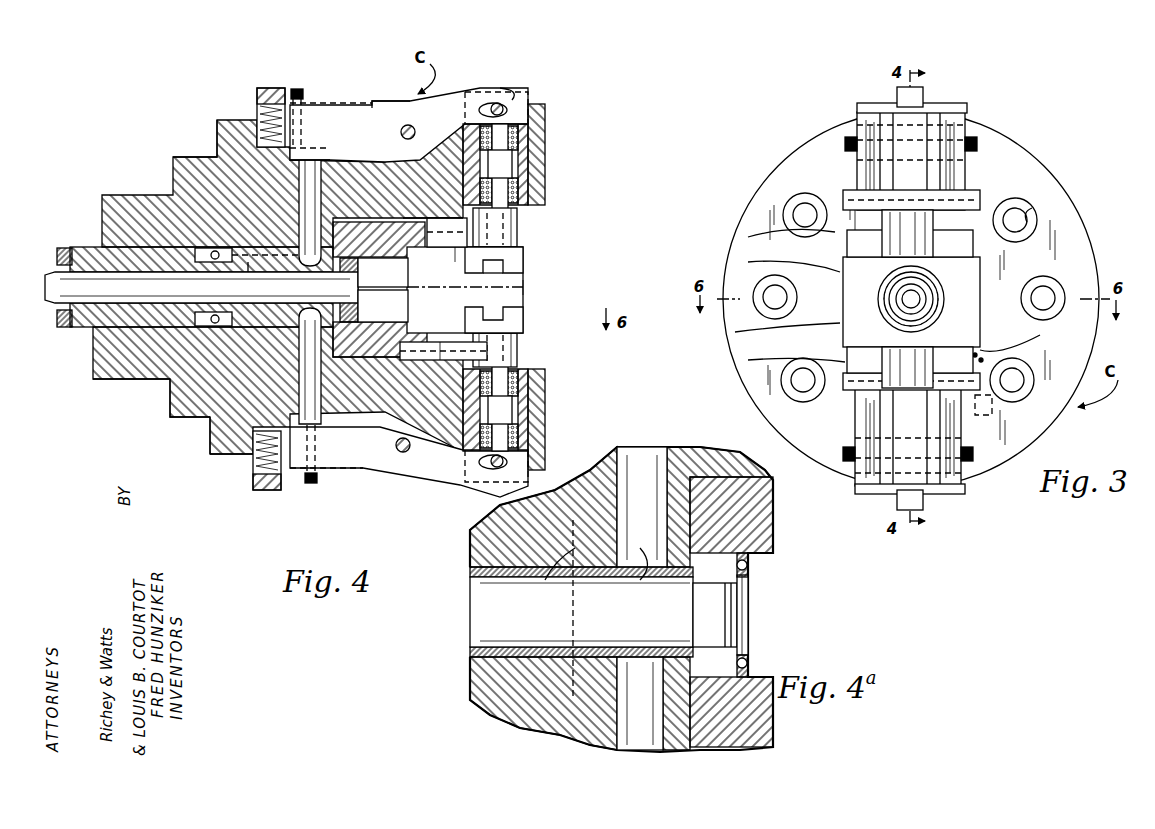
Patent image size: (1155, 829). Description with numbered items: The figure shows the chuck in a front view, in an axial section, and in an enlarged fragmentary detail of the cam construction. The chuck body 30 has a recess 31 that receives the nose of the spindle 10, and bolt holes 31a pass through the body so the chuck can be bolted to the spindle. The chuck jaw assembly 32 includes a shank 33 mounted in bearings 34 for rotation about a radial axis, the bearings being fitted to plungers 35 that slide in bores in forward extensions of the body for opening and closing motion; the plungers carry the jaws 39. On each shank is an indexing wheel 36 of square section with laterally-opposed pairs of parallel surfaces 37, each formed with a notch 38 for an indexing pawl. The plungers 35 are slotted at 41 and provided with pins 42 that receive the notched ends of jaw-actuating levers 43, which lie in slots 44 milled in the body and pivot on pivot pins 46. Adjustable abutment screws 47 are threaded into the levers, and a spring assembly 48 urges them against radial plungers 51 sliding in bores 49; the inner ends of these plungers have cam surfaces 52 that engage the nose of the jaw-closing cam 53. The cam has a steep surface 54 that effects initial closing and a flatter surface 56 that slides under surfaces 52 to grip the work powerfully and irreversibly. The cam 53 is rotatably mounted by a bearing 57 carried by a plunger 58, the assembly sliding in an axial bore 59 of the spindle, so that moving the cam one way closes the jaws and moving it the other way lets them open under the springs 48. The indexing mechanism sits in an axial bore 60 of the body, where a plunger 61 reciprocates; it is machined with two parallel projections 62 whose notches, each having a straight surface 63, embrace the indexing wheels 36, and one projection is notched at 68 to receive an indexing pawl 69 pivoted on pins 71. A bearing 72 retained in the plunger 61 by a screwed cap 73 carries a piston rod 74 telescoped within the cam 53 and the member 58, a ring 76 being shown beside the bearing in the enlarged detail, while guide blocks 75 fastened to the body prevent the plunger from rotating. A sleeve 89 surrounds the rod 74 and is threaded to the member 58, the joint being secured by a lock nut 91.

In FIG. 4, the spindle 10 is at (148, 192).
In FIG. 4A, the spindle 10 is at (472, 715).
In FIG. 4, the cover plate 30 is at (545, 116).
In FIG. 3, the cover plate 30 is at (1030, 162).
In FIG. 4, the recess 31 is at (214, 162).
In FIG. 3, the bolt holes 31a is at (1027, 222).
In FIG. 4, the chuck jaw assembly 32 is at (526, 258).
In FIG. 4, the shank 33 is at (508, 164).
In FIG. 4, the bearings 34 is at (520, 140).
In FIG. 4, the plungers 35 is at (527, 183).
In FIG. 3, the plungers 35 is at (960, 108).
In FIG. 4, the indexing wheel 36 is at (520, 222).
In FIG. 3, the indexing wheel 36 is at (975, 250).
In FIG. 4, the parallel surfaces 37 is at (500, 275).
In FIG. 4, the notch 38 is at (507, 237).
In FIG. 3, the notch 38 is at (868, 272).
In FIG. 4, the jaws 39 is at (523, 287).
In FIG. 4, the slots 41 is at (530, 96).
In FIG. 4, the pins 42 is at (497, 100).
In FIG. 3, the pins 42 is at (972, 142).
In FIG. 4, the jaw-actuating levers 43 is at (445, 96).
In FIG. 3, the jaw-actuating levers 43 is at (925, 92).
In FIG. 4, the slots 44 is at (394, 102).
In FIG. 4, the pivot pins 46 is at (396, 447).
In FIG. 4, the abutment screws 47 is at (306, 92).
In FIG. 4, the spring assembly 48 is at (257, 112).
In FIG. 4, the bores 49 is at (340, 150).
In FIG. 4, the radial plungers 51 is at (298, 220).
In FIG. 4A, the radial plungers 51 is at (652, 455).
In FIG. 4, the cam surfaces 52 is at (343, 285).
In FIG. 4A, the cam surfaces 52 is at (640, 580).
In FIG. 4, the jaw-closing cam 53 is at (222, 438).
In FIG. 4A, the jaw-closing cam 53 is at (470, 680).
In FIG. 4A, the steep surface 54 is at (590, 580).
In FIG. 4A, the flatter surface 56 is at (545, 580).
In FIG. 4, the bearing 57 is at (200, 417).
In FIG. 4, the plunger 58 is at (160, 379).
In FIG. 4A, the plunger 58 is at (470, 655).
In FIG. 4, the axial bore 59 is at (140, 379).
In FIG. 4, the axial bore 60 is at (399, 323).
In FIG. 3, the axial bore 60 is at (748, 262).
In FIG. 4, the plunger 61 is at (395, 260).
In FIG. 3, the plunger 61 is at (735, 333).
In FIG. 4, the projections 62 is at (433, 270).
In FIG. 3, the projections 62 is at (748, 240).
In FIG. 4, the straight surface 63 is at (460, 262).
In FIG. 3, the notch 68 is at (748, 360).
In FIG. 4, the indexing pawl 69 is at (450, 370).
In FIG. 3, the indexing pawl 69 is at (981, 360).
In FIG. 4, the pins 71 is at (425, 368).
In FIG. 3, the pins 71 is at (985, 398).
In FIG. 3, the bearing 72 is at (975, 290).
In FIG. 4A, the bearing 72 is at (746, 562).
In FIG. 4A, the cap 73 is at (775, 528).
In FIG. 4, the piston rod 74 is at (174, 292).
In FIG. 4A, the piston rod 74 is at (746, 610).
In FIG. 4, the guide blocks 75 is at (448, 210).
In FIG. 3, the guide blocks 75 is at (780, 203).
In FIG. 4A, the ring 76 is at (750, 578).
In FIG. 4, the sleeve 89 is at (62, 327).
In FIG. 4, the lock nut 91 is at (62, 248).